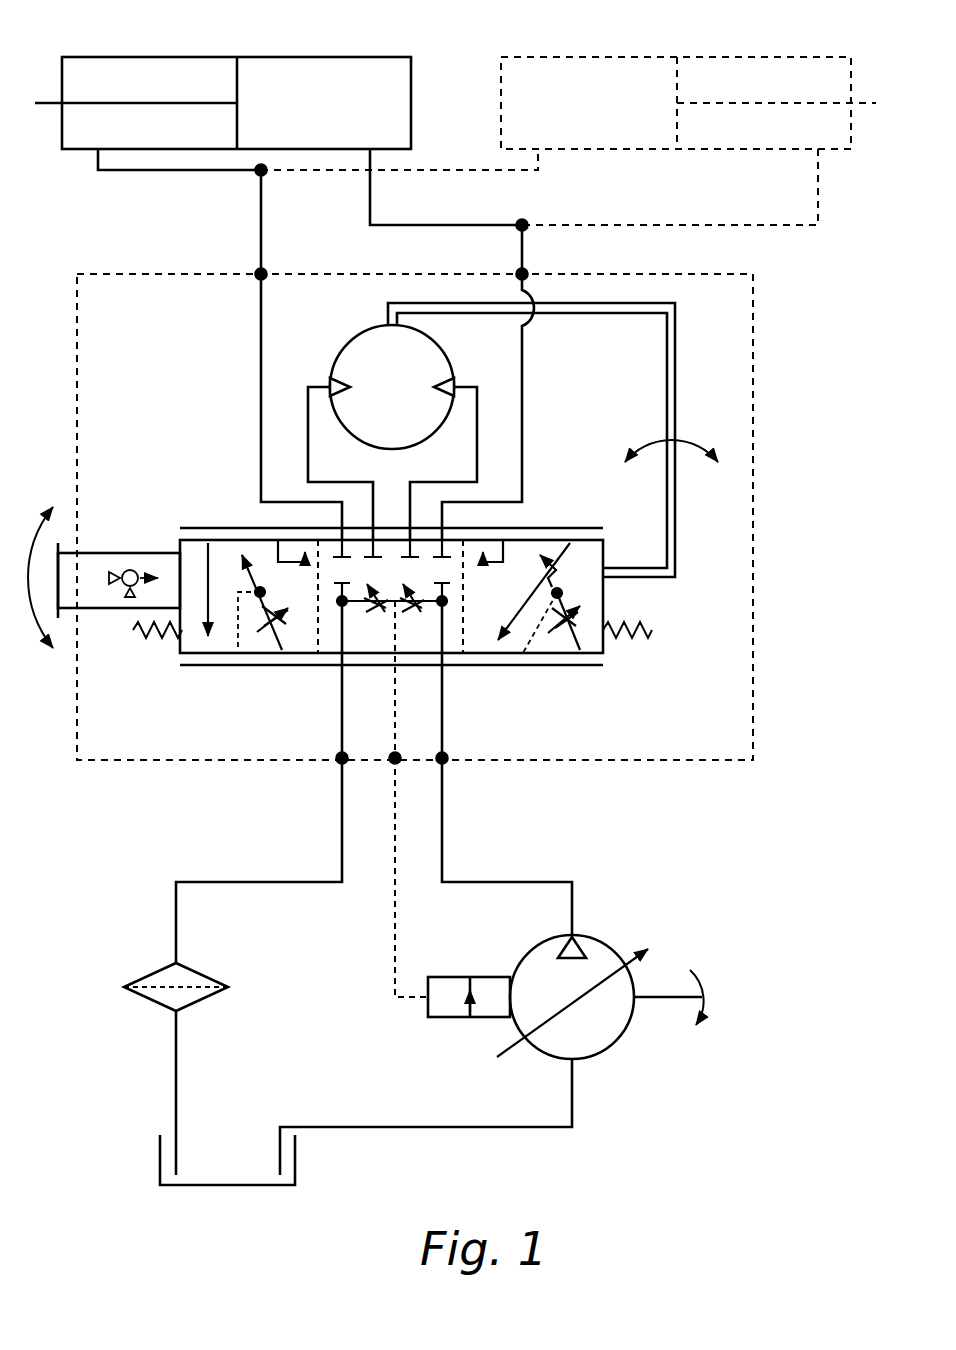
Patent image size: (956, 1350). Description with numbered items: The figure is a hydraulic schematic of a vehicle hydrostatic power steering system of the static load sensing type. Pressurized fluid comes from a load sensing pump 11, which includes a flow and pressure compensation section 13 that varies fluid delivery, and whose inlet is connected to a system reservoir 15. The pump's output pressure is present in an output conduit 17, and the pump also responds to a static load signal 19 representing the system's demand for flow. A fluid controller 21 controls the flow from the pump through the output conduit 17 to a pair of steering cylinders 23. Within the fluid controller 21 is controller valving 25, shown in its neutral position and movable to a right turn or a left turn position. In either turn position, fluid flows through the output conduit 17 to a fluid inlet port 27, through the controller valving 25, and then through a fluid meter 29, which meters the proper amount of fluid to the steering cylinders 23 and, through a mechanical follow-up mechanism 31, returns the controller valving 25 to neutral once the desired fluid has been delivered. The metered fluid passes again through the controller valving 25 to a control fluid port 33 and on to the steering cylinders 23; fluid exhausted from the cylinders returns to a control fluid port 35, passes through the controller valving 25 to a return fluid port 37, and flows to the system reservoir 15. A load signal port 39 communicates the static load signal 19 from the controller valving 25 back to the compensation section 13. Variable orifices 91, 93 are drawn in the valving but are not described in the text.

The load sensing pump 11 is at (605, 942).
The flow and pressure compensation section 13 is at (490, 977).
The system reservoir 15 is at (228, 1187).
The output conduit 17 is at (445, 857).
The static load signal 19 is at (395, 910).
The fluid controller 21 is at (678, 785).
The steering cylinders 23 is at (172, 57).
The controller valving 25 is at (535, 702).
The fluid inlet port 27 is at (446, 762).
The fluid meter 29 is at (366, 336).
The mechanical follow-up mechanism 31 is at (667, 397).
The control fluid port 33 is at (522, 272).
The control fluid port 35 is at (261, 274).
The return fluid port 37 is at (340, 760).
The load signal port 39 is at (393, 760).
The variable orifice 91 is at (418, 632).
The variable orifice 93 is at (371, 632).